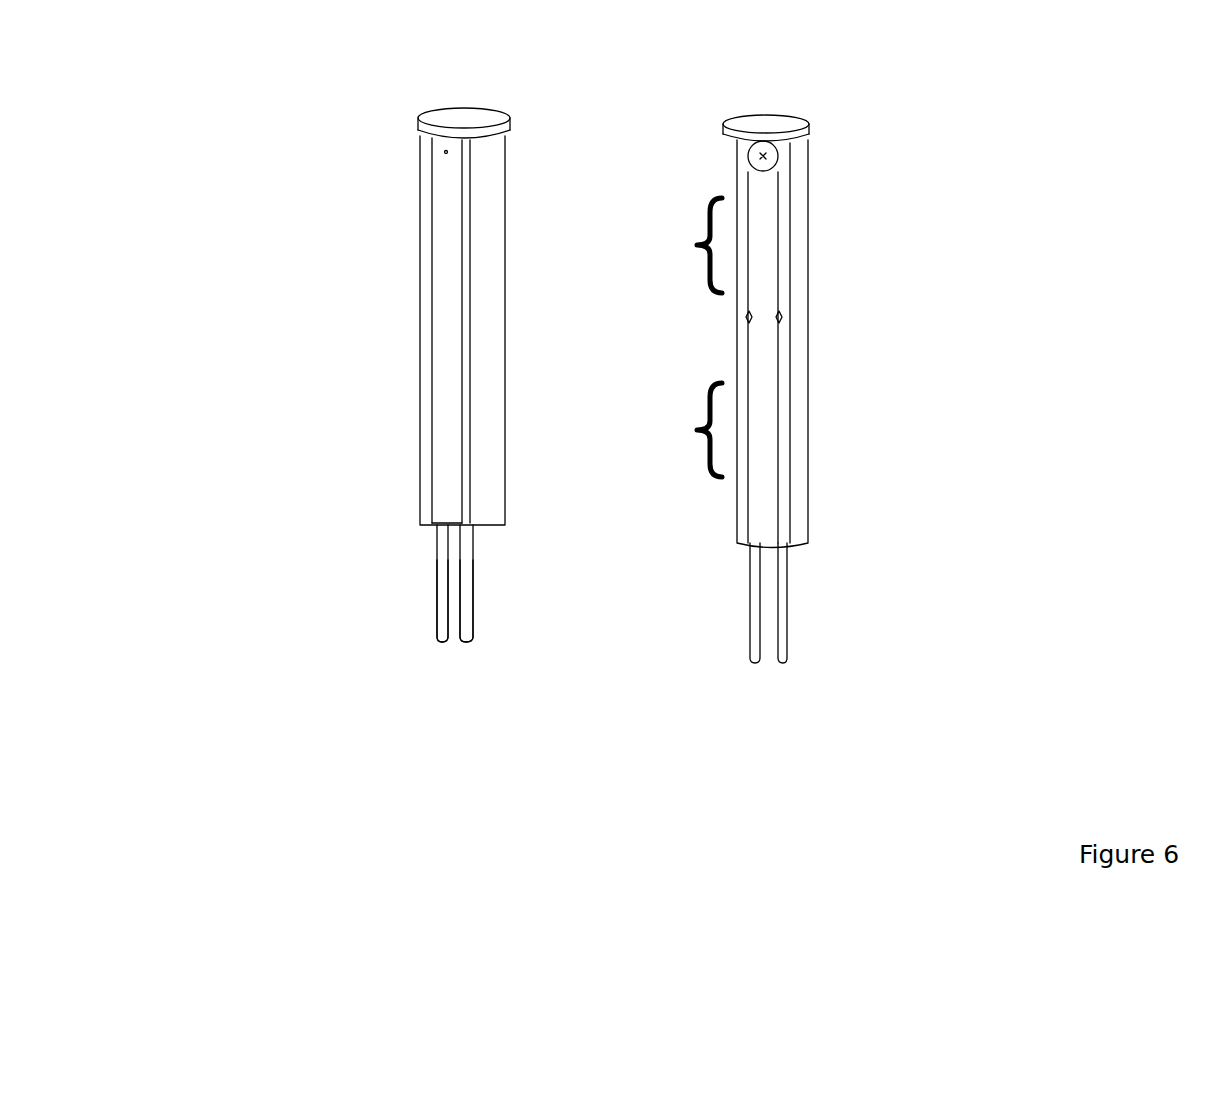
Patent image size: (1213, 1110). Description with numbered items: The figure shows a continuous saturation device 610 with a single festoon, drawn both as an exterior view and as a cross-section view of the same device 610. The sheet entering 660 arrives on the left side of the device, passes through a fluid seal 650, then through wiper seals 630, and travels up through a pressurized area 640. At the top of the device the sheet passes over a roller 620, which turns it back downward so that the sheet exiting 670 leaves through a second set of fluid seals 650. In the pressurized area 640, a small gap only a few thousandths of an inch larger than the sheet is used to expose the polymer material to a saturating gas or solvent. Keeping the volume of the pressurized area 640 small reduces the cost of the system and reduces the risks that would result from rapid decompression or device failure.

The continuous saturation device 610 is at (388, 160).
The roller 620 is at (756, 158).
The wiper seals 630 is at (788, 313).
The pressurized area 640 is at (626, 246).
The fluid seals 650 is at (626, 430).
The sheet entering 660 is at (417, 572).
The sheet exiting 670 is at (494, 572).